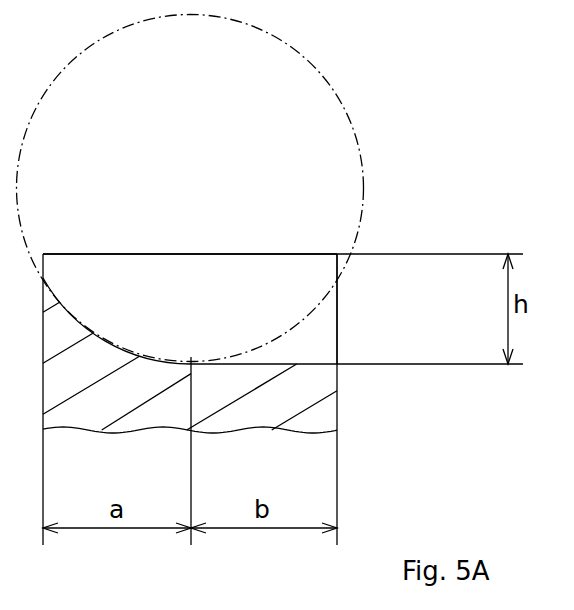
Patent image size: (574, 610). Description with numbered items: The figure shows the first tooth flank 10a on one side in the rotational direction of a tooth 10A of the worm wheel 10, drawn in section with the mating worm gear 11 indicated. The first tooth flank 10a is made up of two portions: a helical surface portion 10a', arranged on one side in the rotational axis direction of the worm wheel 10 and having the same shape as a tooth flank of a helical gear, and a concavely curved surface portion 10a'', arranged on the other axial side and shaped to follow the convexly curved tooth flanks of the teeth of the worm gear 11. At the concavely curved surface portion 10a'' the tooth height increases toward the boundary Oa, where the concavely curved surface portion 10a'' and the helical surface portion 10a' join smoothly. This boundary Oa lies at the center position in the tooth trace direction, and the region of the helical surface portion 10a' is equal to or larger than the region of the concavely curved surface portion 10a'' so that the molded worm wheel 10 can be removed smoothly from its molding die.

The worm gear 11 is at (352, 130).
The worm wheel 10 is at (318, 383).
The concavely curved surface portion 10a'' is at (117, 274).
The first tooth flank 10a is at (190, 228).
The tooth 10A is at (318, 263).
The helical surface portion 10a' is at (357, 333).
The boundary Oa is at (191, 357).